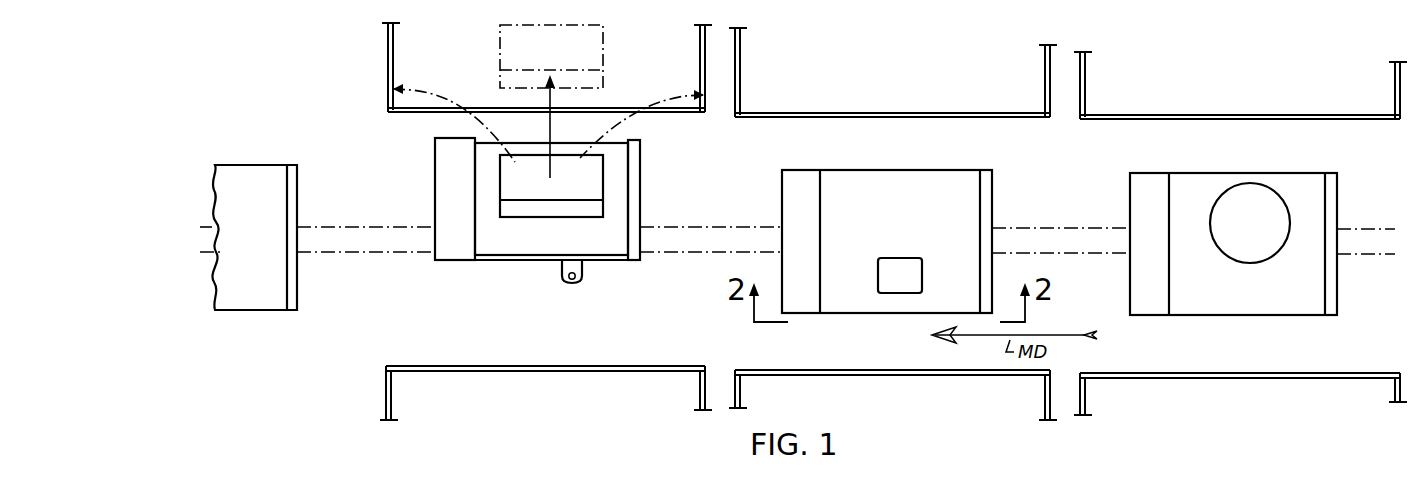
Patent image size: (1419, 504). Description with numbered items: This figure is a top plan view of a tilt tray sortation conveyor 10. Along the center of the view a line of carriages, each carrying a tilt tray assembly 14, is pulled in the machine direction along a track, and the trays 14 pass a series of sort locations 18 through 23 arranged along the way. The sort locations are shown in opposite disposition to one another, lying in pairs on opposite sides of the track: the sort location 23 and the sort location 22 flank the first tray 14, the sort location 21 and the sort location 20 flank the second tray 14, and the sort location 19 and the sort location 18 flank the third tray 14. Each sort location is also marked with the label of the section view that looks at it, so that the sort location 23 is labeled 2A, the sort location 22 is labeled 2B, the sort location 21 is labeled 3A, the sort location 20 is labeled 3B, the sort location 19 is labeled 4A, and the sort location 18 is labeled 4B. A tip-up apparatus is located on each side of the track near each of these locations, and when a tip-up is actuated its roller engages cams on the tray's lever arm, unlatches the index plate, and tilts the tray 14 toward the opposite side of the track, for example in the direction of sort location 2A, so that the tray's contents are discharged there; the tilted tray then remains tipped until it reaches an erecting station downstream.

The tilt tray sortation conveyor 10 is at (373, 315).
The tilt tray assembly 14 is at (760, 183).
The sort location 18 is at (1261, 418).
The sort location 19 is at (1276, 110).
The sort location 20 is at (906, 414).
The sort location 21 is at (924, 96).
The sort location 22 is at (559, 408).
The sort location 23 is at (650, 63).
The sort location 2A is at (460, 49).
The section view 2B bracket 2B is at (475, 416).
The section view 3A bracket 3A is at (845, 59).
The section view 3B bracket 3B is at (842, 412).
The section view 4A bracket 4A is at (1228, 78).
The section view 4B bracket 4B is at (1200, 416).